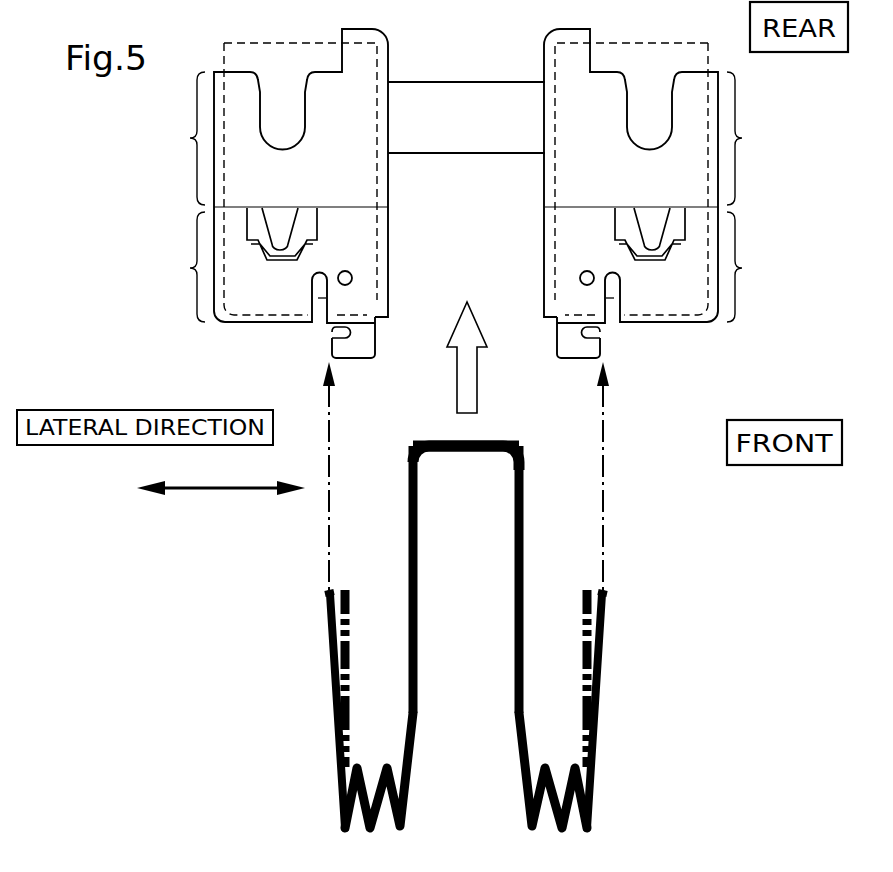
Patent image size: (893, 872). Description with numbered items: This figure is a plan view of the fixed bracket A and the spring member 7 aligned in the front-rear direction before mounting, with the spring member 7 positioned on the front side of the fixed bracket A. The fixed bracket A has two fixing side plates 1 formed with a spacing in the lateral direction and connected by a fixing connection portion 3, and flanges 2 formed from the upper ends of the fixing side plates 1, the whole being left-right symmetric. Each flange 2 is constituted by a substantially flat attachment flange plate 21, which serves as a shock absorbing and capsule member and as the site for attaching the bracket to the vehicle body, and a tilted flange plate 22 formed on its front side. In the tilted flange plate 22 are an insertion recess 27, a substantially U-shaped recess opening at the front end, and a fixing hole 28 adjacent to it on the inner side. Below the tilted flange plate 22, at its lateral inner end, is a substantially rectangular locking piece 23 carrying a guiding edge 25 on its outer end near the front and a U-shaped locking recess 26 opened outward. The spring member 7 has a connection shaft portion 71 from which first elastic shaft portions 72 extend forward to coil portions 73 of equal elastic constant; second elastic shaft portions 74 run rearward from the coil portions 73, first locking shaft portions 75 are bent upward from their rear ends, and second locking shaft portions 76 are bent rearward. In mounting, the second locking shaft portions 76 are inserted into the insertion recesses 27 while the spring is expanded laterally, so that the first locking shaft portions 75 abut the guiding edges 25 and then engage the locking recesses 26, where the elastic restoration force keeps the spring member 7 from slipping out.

The fixing side plate 1 is at (389, 248).
The flange 2 is at (222, 332).
The fixing connection portion 3 is at (415, 157).
The spring member 7 is at (462, 637).
The attachment flange plate 21 is at (466, 138).
The tilted flange plate 22 is at (466, 267).
The locking piece 23 is at (378, 357).
The guiding edge 25 is at (323, 375).
The locking recess 26 is at (349, 329).
The insertion recess 27 is at (322, 300).
The fixing hole 28 is at (353, 279).
The connection shaft portion 71 is at (467, 453).
The first elastic shaft portion 72 is at (419, 583).
The coil portion 73 is at (383, 762).
The second elastic shaft portion 74 is at (338, 754).
The first locking shaft portion 75 is at (326, 638).
The second locking shaft portion 76 is at (324, 598).
The fixed bracket A is at (660, 336).